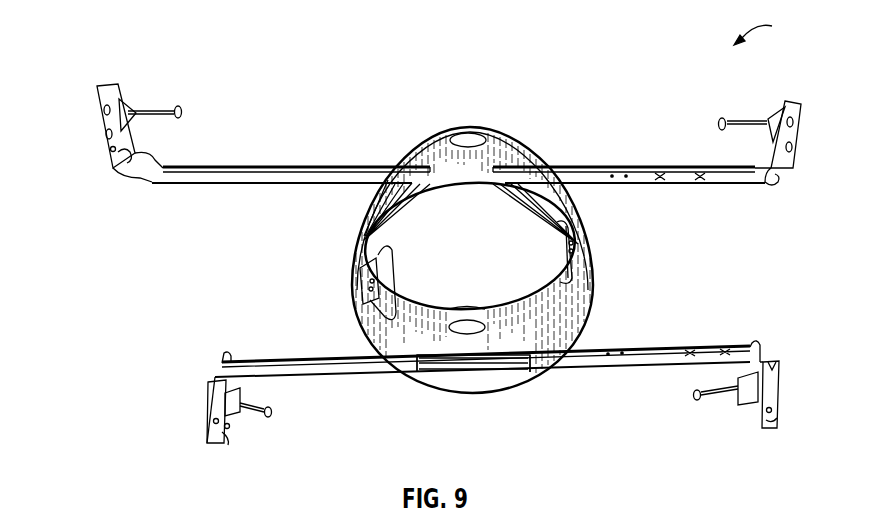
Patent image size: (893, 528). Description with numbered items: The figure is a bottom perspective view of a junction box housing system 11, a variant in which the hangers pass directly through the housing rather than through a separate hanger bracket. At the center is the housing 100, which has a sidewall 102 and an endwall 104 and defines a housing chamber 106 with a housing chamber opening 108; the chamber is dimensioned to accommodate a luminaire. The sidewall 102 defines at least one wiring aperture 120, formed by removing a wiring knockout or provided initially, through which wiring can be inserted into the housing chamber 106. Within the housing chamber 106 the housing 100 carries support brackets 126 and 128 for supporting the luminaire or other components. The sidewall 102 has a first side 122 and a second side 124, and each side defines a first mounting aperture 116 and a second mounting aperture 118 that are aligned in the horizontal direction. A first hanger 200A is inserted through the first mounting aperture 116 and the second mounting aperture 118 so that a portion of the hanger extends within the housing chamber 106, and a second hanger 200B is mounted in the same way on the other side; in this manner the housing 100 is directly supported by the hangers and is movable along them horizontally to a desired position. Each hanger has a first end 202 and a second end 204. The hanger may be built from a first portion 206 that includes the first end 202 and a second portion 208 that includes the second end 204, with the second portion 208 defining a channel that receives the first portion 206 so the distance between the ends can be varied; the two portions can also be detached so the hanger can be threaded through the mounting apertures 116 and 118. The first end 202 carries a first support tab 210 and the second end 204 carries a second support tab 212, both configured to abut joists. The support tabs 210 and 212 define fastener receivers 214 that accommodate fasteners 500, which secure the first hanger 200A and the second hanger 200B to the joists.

The junction box housing system 11 is at (765, 28).
The housing 100 is at (592, 276).
The sidewall 102 is at (578, 305).
The endwall 104 is at (473, 207).
The housing chamber 106 is at (392, 238).
The housing chamber opening 108 is at (472, 394).
The first mounting aperture 116 is at (417, 197).
The second mounting aperture 118 is at (518, 168).
The wiring aperture 120 is at (486, 136).
The first side 122 is at (450, 132).
The second side 124 is at (493, 382).
The support bracket 126 is at (575, 252).
The support bracket 128 is at (360, 277).
The first hanger 200A is at (236, 166).
The second hanger 200B is at (262, 360).
The first end 202 is at (103, 125).
The second end 204 is at (787, 165).
The first portion 206 is at (99, 113).
The second portion 208 is at (801, 131).
The first support tab 210 is at (125, 166).
The second support tab 212 is at (776, 184).
The fastener receiver 214 is at (123, 103).
The fastener 500 is at (182, 111).